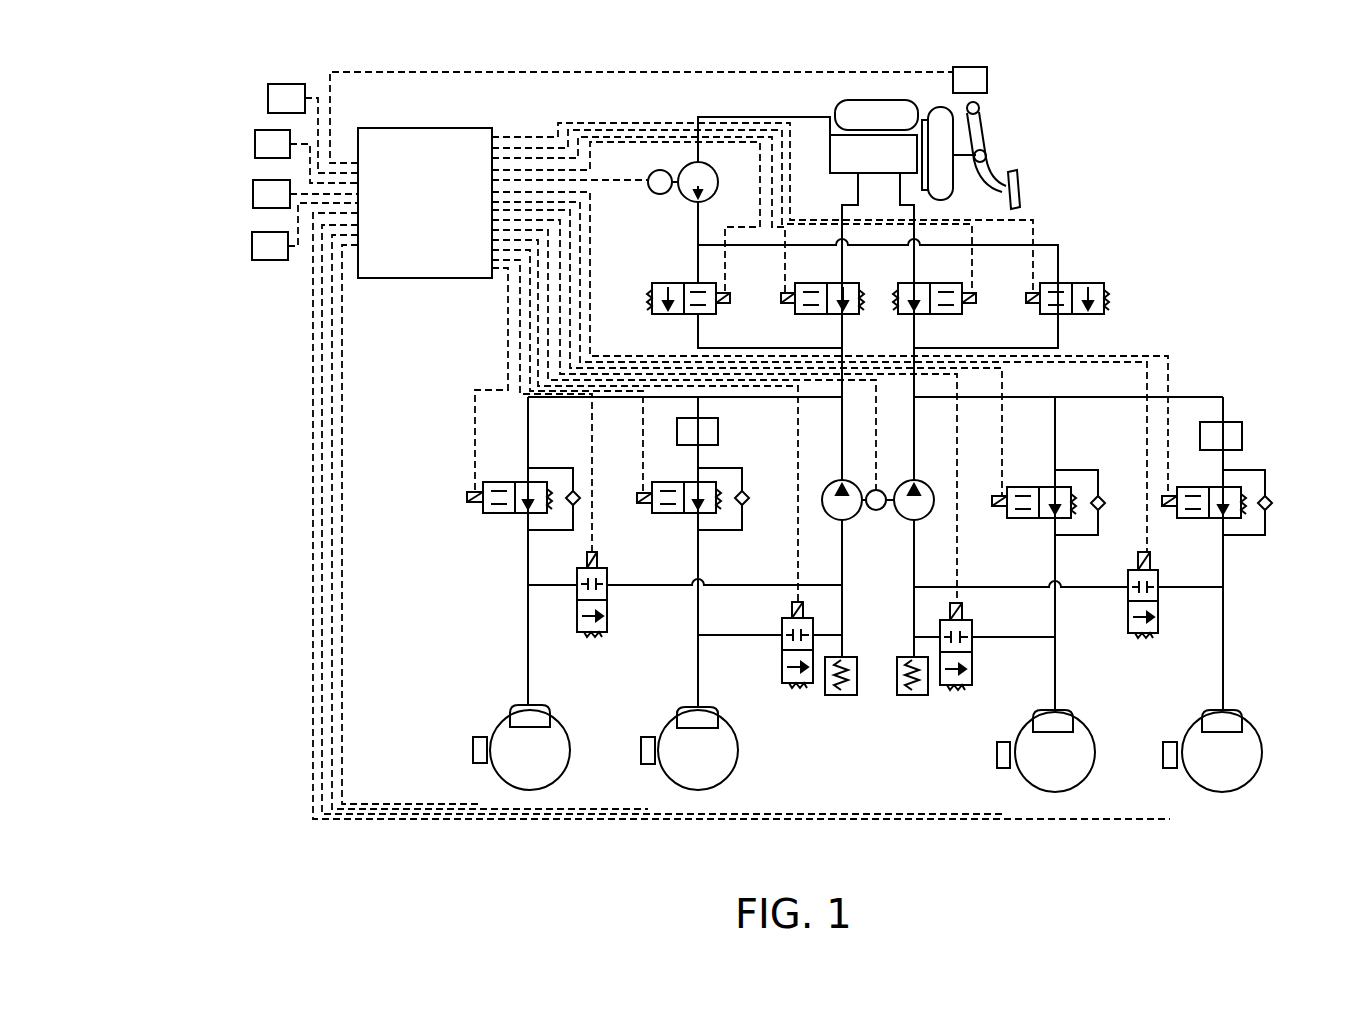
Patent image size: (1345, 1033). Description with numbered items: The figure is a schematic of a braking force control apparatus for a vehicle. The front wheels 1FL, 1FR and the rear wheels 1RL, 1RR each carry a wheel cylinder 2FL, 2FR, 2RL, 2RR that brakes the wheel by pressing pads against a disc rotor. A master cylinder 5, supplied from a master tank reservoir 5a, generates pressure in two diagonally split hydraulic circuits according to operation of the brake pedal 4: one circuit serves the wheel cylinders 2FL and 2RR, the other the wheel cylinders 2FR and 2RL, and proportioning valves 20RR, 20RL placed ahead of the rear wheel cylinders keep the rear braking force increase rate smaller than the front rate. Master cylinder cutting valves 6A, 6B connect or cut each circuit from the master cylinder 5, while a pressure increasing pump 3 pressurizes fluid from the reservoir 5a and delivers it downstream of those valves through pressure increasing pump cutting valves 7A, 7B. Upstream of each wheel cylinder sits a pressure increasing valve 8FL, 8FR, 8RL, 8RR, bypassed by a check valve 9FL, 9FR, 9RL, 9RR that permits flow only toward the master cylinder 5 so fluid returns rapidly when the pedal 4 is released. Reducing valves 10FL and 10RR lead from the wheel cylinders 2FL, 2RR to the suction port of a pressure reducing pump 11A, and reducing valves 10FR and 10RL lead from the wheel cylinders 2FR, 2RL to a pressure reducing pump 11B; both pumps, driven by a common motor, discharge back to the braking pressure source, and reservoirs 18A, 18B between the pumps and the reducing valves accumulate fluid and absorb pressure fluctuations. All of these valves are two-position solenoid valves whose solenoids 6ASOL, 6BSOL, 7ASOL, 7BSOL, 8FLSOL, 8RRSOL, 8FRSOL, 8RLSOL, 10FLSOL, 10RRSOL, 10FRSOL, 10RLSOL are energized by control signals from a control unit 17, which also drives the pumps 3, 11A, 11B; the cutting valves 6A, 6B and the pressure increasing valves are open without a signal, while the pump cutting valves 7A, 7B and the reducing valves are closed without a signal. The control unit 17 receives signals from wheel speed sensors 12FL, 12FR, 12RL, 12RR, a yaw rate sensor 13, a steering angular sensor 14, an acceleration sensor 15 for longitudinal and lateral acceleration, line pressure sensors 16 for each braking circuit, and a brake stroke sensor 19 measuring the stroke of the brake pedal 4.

The front left wheel 1FL is at (560, 748).
The rear right wheel 1RR is at (730, 770).
The front right wheel 1FR is at (1085, 782).
The rear left wheel 1RL is at (1255, 782).
The front left wheel cylinder 2FL is at (551, 705).
The rear right wheel cylinder 2RR is at (685, 707).
The front right wheel cylinder 2FR is at (1061, 710).
The rear left wheel cylinder 2RL is at (1231, 710).
The pressure increasing pump 3 is at (680, 196).
The brake pedal 4 is at (1020, 182).
The master cylinder 5 is at (830, 138).
The master tank reservoir 5a is at (880, 100).
The master cylinder cutting valve 6A is at (815, 286).
The master cylinder cutting valve 6B is at (944, 286).
The pressure increasing pump cutting valve 7A is at (677, 316).
The pressure increasing pump cutting valve 7B is at (1082, 317).
The solenoid of master cylinder cutting valve 6A 6ASOL is at (790, 305).
The solenoid of master cylinder cutting valve 6B 6BSOL is at (970, 305).
The solenoid of pressure increasing pump cutting valve 7A 7ASOL is at (720, 290).
The solenoid of pressure increasing pump cutting valve 7B 7BSOL is at (1030, 292).
The pressure increasing valve 8FL is at (505, 481).
The pressure increasing valve 8RR is at (691, 483).
The pressure increasing valve 8FR is at (1035, 486).
The pressure increasing valve 8RL is at (1172, 523).
The solenoid of pressure increasing valve 8FL 8FLSOL is at (475, 504).
The solenoid of pressure increasing valve 8RR 8RRSOL is at (642, 505).
The solenoid of pressure increasing valve 8FR 8FRSOL is at (998, 508).
The solenoid of pressure increasing valve 8RL 8RLSOL is at (1168, 496).
The check valve 9FL is at (573, 490).
The check valve 9RR is at (744, 490).
The check valve 9FR is at (1097, 494).
The check valve 9RL is at (1268, 495).
The reducing valve 10FL is at (573, 604).
The reducing valve 10RR is at (779, 644).
The reducing valve 10FR is at (973, 638).
The reducing valve 10RL is at (1159, 611).
The solenoid of reducing valve 10FL 10FLSOL is at (582, 556).
The solenoid of reducing valve 10RR 10RRSOL is at (792, 603).
The solenoid of reducing valve 10FR 10FRSOL is at (958, 603).
The solenoid of reducing valve 10RL 10RLSOL is at (1152, 560).
The pressure reducing pump 11A is at (847, 522).
The pressure reducing pump 11B is at (908, 522).
The wheel speed sensor 12FL is at (475, 737).
The wheel speed sensor 12RR is at (645, 737).
The wheel speed sensor 12FR is at (997, 748).
The wheel speed sensor 12RL is at (1170, 742).
The yaw rate sensor 13 is at (268, 97).
The angular sensor 14 is at (255, 146).
The acceleration sensor 15 is at (253, 196).
The line pressure sensor 16 is at (252, 248).
The control unit 17 is at (452, 128).
The reservoir 18A is at (840, 695).
The reservoir 18B is at (912, 695).
The brake stroke sensor 19 is at (987, 80).
The proportioning valve 20RR is at (720, 433).
The proportioning valve 20RL is at (1243, 422).